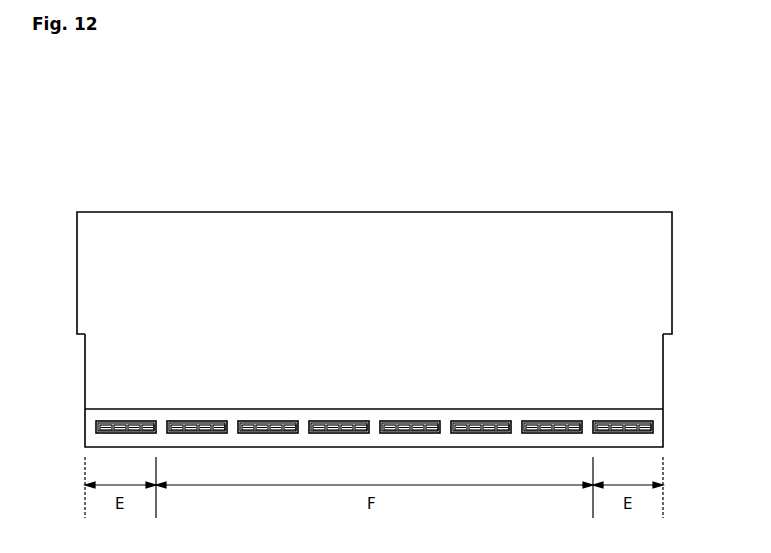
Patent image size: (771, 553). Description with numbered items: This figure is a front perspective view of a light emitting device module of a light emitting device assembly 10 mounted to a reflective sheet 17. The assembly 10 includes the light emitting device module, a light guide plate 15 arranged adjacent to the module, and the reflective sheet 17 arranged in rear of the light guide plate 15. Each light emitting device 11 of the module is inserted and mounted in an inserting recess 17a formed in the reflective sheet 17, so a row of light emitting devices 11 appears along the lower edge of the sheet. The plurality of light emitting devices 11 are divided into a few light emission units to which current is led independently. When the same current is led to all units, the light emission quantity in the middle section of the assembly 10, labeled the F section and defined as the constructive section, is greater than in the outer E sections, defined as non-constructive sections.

The light emitting device assembly 10 is at (406, 297).
The light guide plate 15 is at (560, 243).
The reflective sheet 17 is at (674, 275).
The inserting recess 17a is at (654, 424).
The light emitting device 11 is at (632, 429).